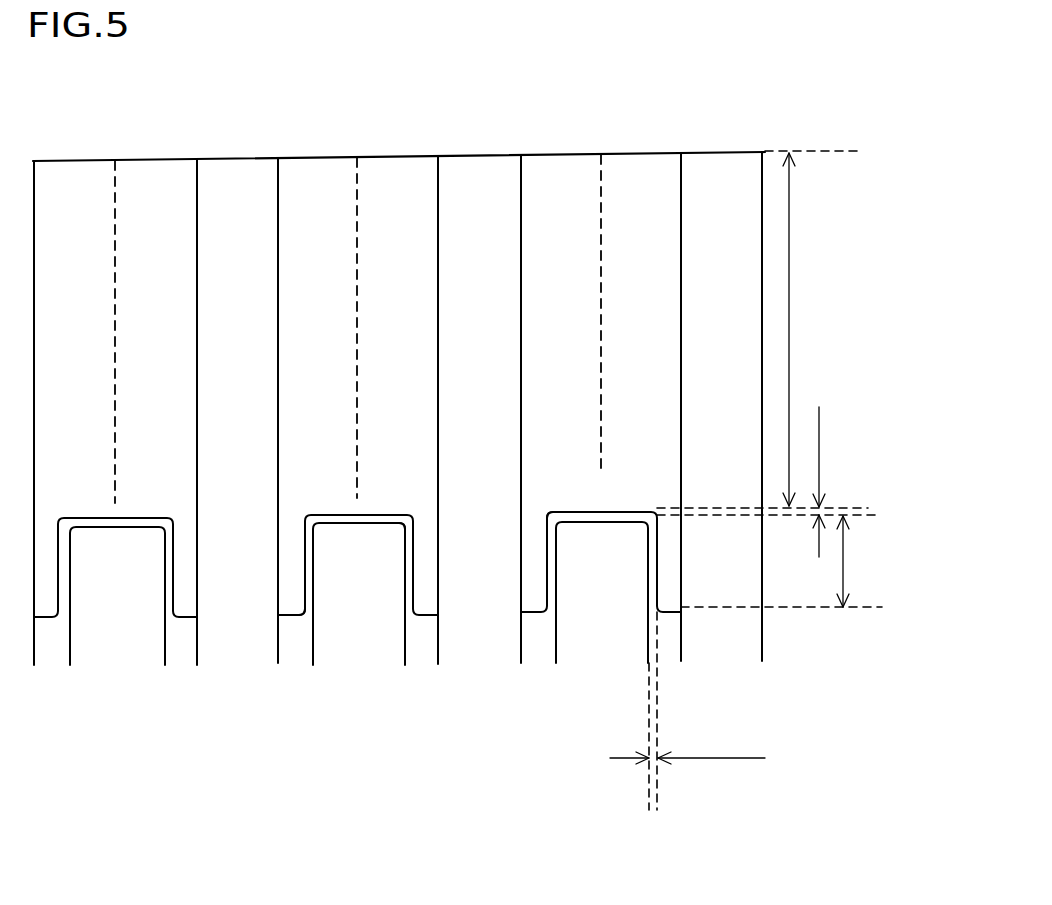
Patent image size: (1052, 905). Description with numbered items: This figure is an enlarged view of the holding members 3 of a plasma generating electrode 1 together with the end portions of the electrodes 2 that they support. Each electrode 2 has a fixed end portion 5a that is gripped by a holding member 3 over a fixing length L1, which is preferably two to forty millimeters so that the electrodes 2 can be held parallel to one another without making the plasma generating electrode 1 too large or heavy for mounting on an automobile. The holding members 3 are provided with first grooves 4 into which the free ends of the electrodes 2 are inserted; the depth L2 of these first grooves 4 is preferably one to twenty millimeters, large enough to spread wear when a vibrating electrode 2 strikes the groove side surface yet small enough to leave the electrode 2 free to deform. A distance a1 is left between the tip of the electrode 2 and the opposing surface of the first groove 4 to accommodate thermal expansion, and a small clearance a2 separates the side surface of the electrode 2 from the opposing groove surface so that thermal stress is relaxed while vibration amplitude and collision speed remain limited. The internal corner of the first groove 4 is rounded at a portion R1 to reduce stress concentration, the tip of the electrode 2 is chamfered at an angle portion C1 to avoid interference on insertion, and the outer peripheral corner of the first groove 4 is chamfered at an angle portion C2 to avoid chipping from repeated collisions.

The plasma generating electrode 1 is at (291, 103).
The electrode 2 is at (500, 268).
The holding member 3 is at (390, 270).
The first groove 4 is at (594, 497).
The fixed end portion 5a is at (345, 535).
The angle portion C1 is at (398, 533).
The angle portion C2 is at (298, 620).
The portion corresponding with an angle of an internal surface R1 is at (537, 520).
The length of the fixing portion L1 is at (811, 328).
The depth of the first grooves L2 is at (789, 561).
The distance between free end tip and holding member surface a1 is at (767, 482).
The distance between free end side surface and groove surface a2 is at (687, 711).